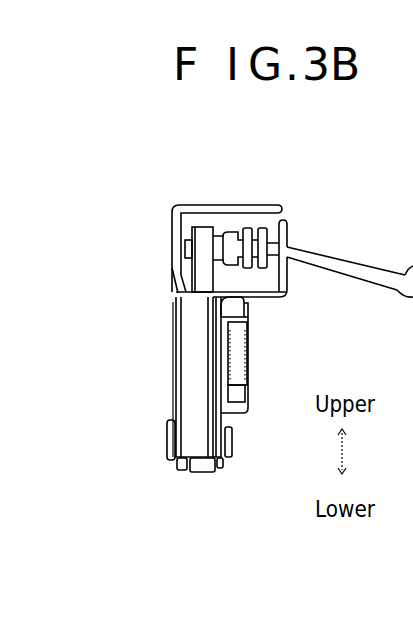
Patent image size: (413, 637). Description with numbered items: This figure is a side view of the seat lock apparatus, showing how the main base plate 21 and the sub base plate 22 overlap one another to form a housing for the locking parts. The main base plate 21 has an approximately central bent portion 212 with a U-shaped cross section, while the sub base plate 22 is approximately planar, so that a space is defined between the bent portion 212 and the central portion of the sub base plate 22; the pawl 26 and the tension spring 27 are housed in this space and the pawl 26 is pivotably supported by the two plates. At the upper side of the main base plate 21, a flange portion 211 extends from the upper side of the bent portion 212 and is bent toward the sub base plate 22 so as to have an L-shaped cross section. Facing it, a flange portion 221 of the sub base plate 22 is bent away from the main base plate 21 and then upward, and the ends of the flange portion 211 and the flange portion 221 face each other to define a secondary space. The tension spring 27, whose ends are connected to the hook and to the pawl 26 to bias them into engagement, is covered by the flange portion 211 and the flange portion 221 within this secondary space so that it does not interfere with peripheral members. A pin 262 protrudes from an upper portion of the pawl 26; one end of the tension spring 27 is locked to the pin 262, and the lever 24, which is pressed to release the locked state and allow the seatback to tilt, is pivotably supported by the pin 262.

The main base plate 21 is at (215, 413).
The flange portion 211 is at (187, 205).
The bent portion 212 is at (188, 343).
The sub base plate 22 is at (232, 410).
The flange portion 221 is at (289, 246).
The lever 24 is at (318, 262).
The pawl 26 is at (200, 268).
The pin 262 is at (244, 224).
The tension spring 27 is at (226, 230).